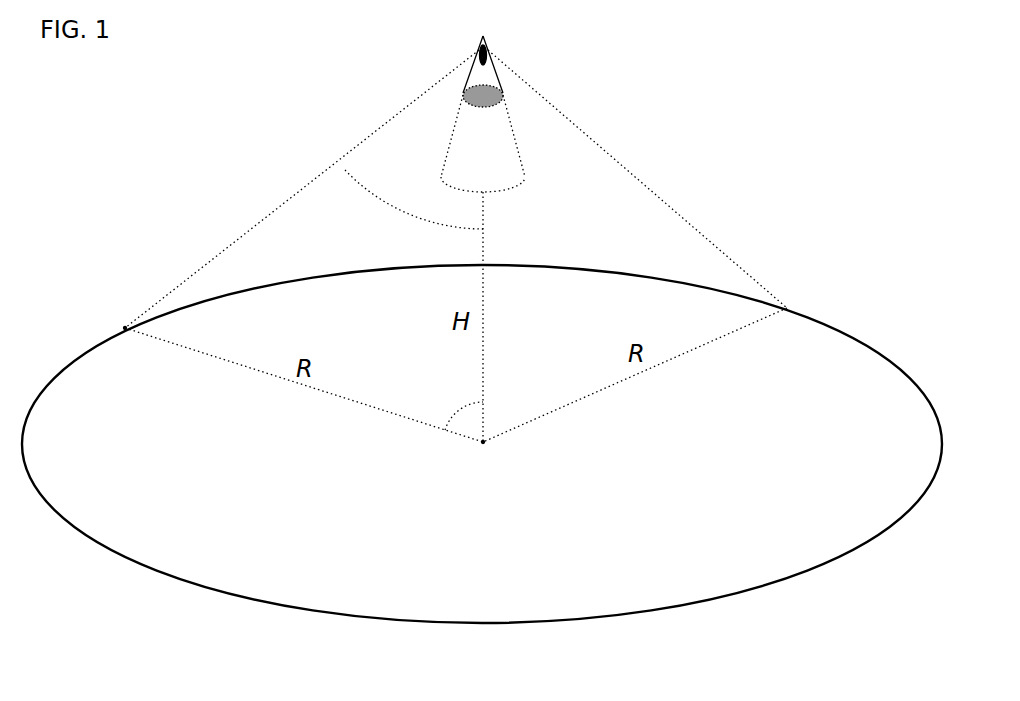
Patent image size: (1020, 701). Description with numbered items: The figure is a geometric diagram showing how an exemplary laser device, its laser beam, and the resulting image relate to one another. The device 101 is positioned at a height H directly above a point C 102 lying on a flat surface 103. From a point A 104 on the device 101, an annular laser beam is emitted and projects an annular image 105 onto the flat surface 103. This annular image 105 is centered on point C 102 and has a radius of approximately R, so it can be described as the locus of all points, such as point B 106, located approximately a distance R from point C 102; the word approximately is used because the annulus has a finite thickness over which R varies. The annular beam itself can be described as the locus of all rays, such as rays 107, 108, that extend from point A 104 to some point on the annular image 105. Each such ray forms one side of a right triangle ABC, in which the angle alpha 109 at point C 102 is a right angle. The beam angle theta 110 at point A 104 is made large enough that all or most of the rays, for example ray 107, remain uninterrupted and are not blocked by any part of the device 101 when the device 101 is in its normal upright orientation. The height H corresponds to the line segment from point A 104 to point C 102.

The device 101 is at (483, 138).
The point C 102 is at (469, 470).
The flat surface 103 is at (482, 444).
The point A 104 is at (490, 63).
The annular image 105 is at (482, 444).
The point B 106 is at (87, 322).
The ray 107 is at (310, 192).
The ray 108 is at (598, 153).
The angle α 109 is at (446, 401).
The angle θ 110 is at (414, 199).